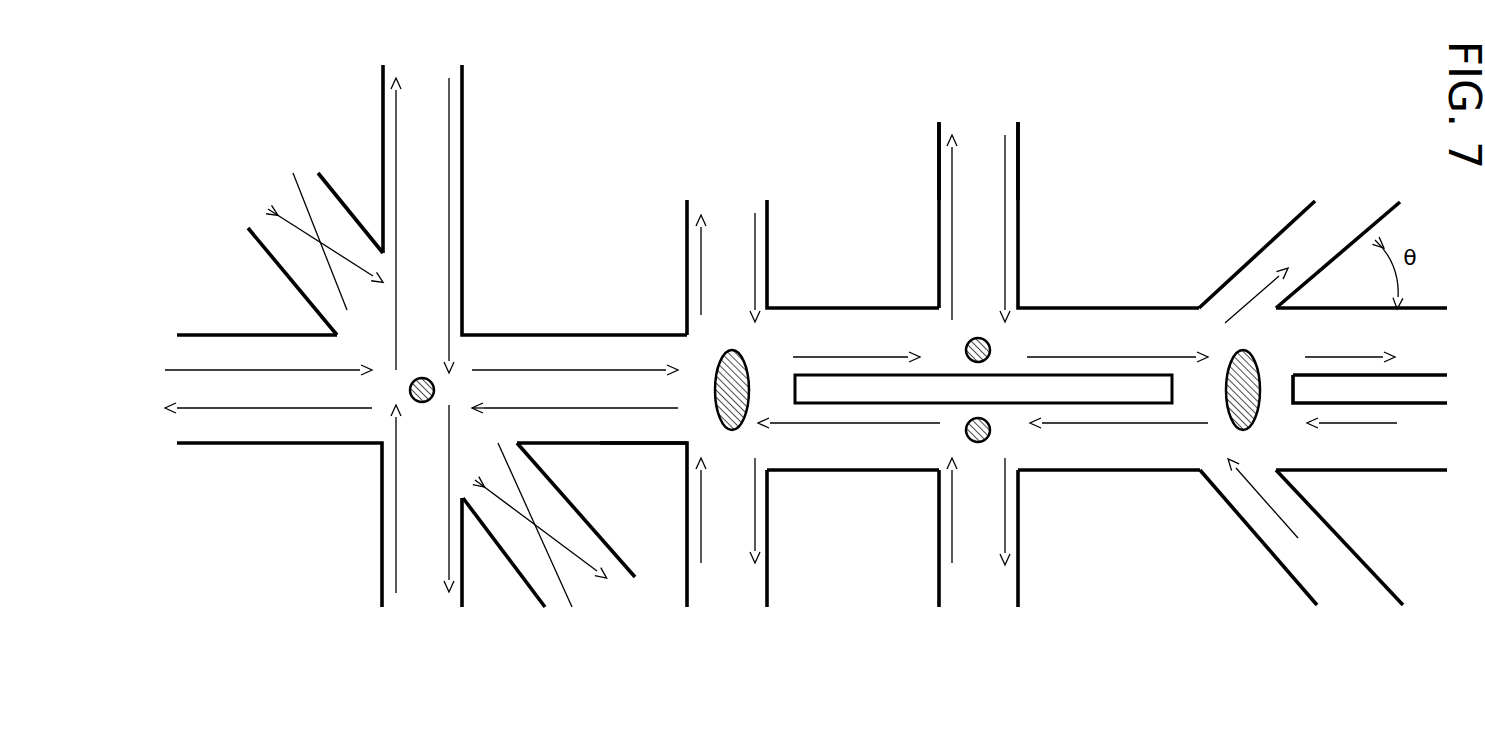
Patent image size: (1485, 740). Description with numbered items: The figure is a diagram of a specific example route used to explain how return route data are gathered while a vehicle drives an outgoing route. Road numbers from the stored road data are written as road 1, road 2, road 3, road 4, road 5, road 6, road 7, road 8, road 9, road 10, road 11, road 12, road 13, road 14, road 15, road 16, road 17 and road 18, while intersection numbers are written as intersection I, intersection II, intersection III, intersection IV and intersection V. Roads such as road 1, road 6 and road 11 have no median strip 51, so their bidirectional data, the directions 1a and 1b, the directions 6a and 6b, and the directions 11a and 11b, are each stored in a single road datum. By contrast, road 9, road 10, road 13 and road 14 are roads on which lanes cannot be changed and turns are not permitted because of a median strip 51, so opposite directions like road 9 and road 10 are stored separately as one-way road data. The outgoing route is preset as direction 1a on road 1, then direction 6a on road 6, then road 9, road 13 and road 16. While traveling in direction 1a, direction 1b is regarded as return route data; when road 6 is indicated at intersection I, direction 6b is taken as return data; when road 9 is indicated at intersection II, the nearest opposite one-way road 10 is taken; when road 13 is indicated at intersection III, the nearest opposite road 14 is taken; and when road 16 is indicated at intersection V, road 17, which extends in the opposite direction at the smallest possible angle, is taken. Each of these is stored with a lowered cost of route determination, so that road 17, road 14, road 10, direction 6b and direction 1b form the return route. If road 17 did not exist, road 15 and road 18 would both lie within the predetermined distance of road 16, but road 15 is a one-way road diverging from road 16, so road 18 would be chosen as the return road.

The road 1 is at (279, 471).
The direction 1a is at (262, 356).
The direction 1b is at (274, 424).
The road 2 is at (315, 254).
The road 3 is at (429, 506).
The road 4 is at (535, 217).
The road 5 is at (549, 525).
The road 6 is at (579, 492).
The direction 6a is at (569, 356).
The direction 6b is at (643, 429).
The road 7 is at (813, 267).
The road 8 is at (820, 532).
The road 9 is at (850, 341).
The road 10 is at (855, 440).
The road 11 is at (1069, 221).
The direction 11a is at (955, 148).
The direction 11b is at (1010, 148).
The road 12 is at (1069, 532).
The road 13 is at (1111, 340).
The road 14 is at (1125, 439).
The road 15 is at (1323, 262).
The road 16 is at (1370, 349).
The road 17 is at (1370, 415).
The road 18 is at (1323, 536).
The median strip 51 is at (832, 388).
The intersection I is at (428, 380).
The intersection II is at (723, 390).
The intersection III is at (990, 348).
The intersection IV is at (990, 432).
The intersection V is at (1237, 395).